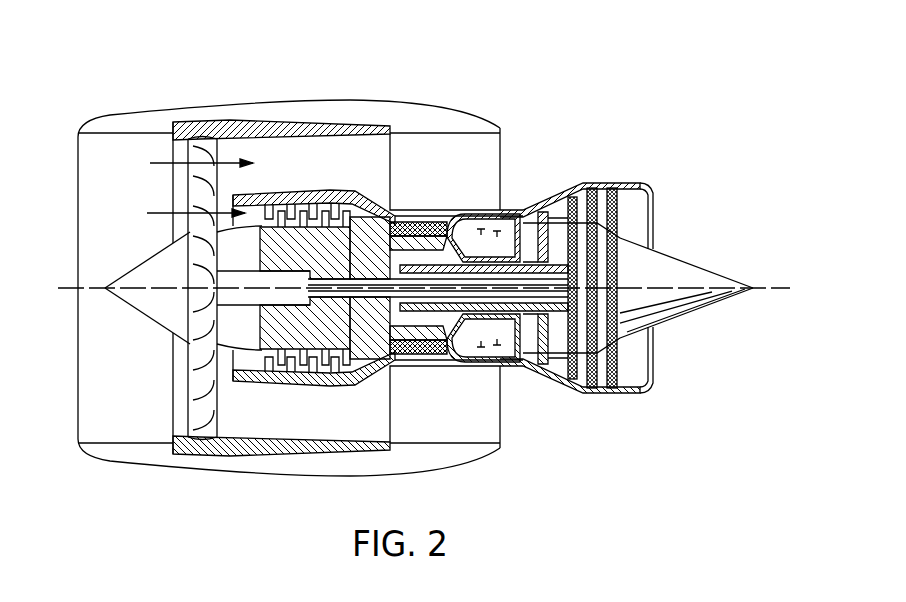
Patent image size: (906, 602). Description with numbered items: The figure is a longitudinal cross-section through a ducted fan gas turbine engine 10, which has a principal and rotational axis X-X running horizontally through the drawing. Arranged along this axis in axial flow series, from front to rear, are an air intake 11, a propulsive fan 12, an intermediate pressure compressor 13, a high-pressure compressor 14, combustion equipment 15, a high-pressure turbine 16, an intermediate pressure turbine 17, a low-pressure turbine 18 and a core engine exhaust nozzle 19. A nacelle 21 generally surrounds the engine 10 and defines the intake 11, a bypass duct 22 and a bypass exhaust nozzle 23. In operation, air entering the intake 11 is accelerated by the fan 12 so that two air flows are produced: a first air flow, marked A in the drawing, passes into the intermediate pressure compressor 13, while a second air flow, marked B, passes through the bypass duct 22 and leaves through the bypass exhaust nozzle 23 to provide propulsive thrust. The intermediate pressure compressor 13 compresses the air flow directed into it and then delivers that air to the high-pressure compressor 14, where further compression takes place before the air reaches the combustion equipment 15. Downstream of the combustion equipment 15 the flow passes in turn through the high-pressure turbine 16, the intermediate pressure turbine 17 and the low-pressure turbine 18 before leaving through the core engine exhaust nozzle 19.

The ducted fan gas turbine engine 10 is at (147, 85).
The air intake 11 is at (127, 134).
The propulsive fan 12 is at (193, 397).
The intermediate pressure compressor 13 is at (320, 386).
The high-pressure compressor 14 is at (410, 226).
The combustion equipment 15 is at (470, 343).
The high-pressure turbine 16 is at (517, 364).
The intermediate pressure turbine 17 is at (541, 204).
The low-pressure turbine 18 is at (567, 383).
The core engine exhaust nozzle 19 is at (647, 183).
The nacelle 21 is at (293, 102).
The bypass duct 22 is at (470, 167).
The bypass exhaust nozzle 23 is at (503, 130).